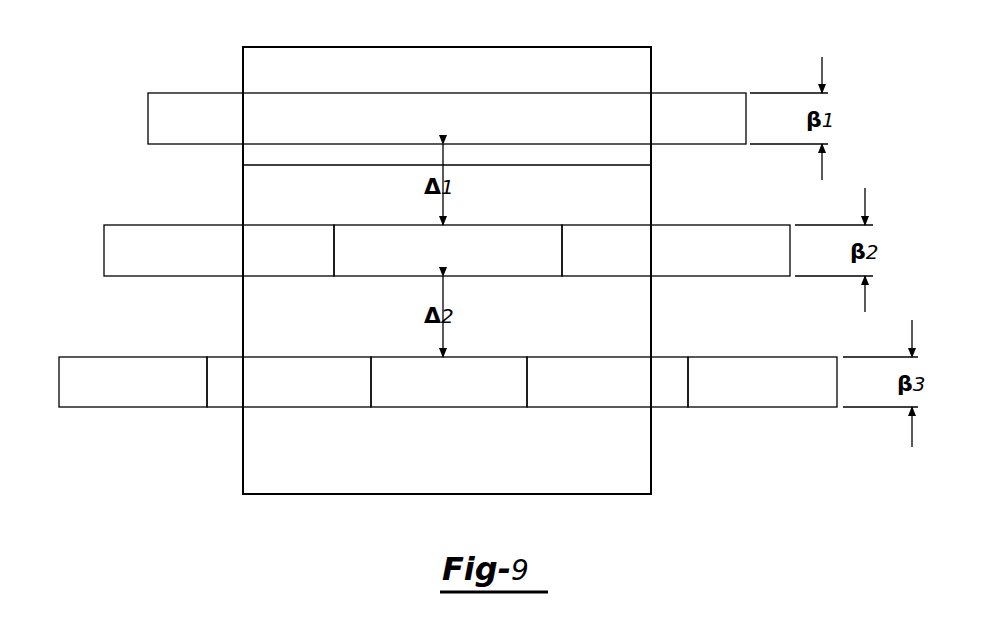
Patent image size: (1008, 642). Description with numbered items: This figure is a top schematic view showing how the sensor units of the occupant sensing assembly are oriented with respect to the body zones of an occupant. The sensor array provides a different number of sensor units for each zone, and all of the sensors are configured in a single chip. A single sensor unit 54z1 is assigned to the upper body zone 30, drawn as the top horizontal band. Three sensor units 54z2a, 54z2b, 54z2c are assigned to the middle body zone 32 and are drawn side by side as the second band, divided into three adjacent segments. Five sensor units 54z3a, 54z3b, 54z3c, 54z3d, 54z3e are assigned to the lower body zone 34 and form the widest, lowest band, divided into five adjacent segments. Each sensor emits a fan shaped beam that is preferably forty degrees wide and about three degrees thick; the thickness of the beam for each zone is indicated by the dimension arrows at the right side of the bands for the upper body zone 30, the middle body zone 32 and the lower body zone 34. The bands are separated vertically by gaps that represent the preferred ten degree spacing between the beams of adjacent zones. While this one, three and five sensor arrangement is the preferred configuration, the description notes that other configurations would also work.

The upper body zone 30 is at (623, 61).
The middle body zone 32 is at (595, 200).
The lower body zone 34 is at (628, 455).
The sensor unit 54z1 is at (725, 103).
The sensor unit 54z2a is at (140, 235).
The sensor unit 54z2b is at (385, 235).
The sensor unit 54z2c is at (735, 238).
The sensor unit 54z3a is at (118, 370).
The sensor unit 54z3b is at (303, 387).
The sensor unit 54z3c is at (458, 385).
The sensor unit 54z3d is at (587, 385).
The sensor unit 54z3e is at (750, 372).